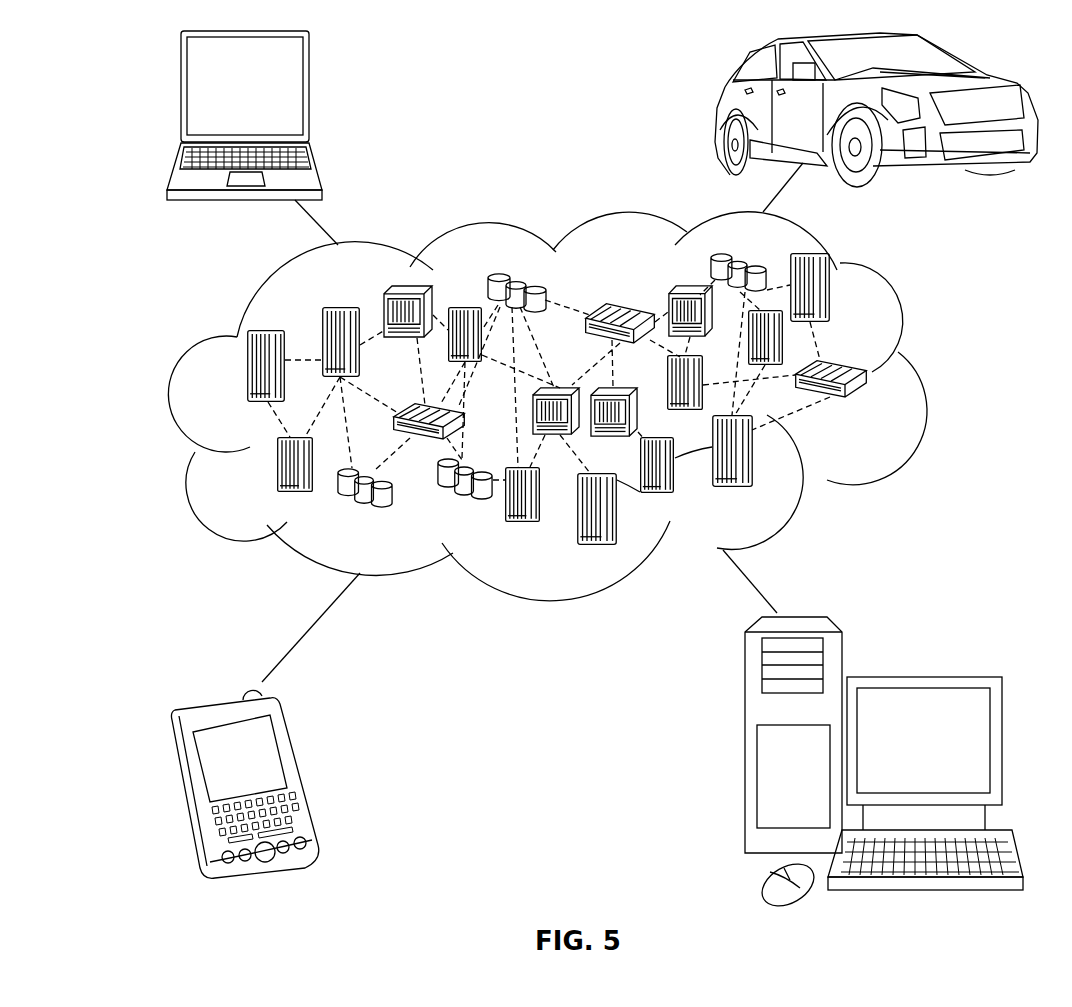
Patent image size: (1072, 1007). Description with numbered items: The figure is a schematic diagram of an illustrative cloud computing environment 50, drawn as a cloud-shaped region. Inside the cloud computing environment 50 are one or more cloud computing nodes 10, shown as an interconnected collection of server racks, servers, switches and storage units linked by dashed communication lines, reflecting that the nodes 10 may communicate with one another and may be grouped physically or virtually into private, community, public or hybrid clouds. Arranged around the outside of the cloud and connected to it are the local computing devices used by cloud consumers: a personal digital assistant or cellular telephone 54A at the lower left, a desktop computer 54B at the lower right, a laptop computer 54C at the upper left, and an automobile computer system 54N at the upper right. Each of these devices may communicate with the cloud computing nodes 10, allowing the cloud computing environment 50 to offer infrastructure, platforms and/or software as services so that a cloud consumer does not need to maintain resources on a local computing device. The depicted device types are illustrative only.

The cloud computing nodes 10 is at (865, 407).
The cloud computing environment 50 is at (920, 376).
The personal digital assistant (PDA) or cellular telephone 54A is at (300, 770).
The desktop computer 54B is at (920, 677).
The laptop computer 54C is at (309, 96).
The automobile computer system 54N is at (718, 105).